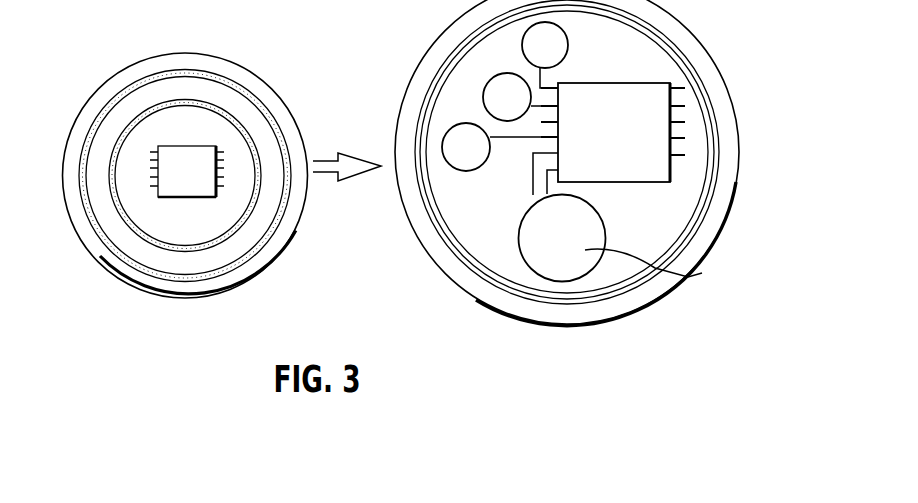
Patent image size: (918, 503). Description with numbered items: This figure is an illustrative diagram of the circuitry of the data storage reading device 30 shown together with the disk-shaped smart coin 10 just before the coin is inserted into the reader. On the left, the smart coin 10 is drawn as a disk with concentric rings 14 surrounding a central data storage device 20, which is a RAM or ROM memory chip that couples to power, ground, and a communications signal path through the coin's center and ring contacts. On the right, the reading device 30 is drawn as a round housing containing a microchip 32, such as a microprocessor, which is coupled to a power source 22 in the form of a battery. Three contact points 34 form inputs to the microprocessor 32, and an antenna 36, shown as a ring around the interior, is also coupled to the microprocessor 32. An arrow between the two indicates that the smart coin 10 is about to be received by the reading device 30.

The smart coin 10 is at (74, 92).
The antenna coil rings 14 is at (238, 119).
The data storage device 20 is at (185, 190).
The data storage reading device 30 is at (760, 103).
The microchip 32 is at (603, 161).
The contact points 34 is at (522, 42).
The antenna 36 is at (663, 38).
The power source 22 is at (519, 227).